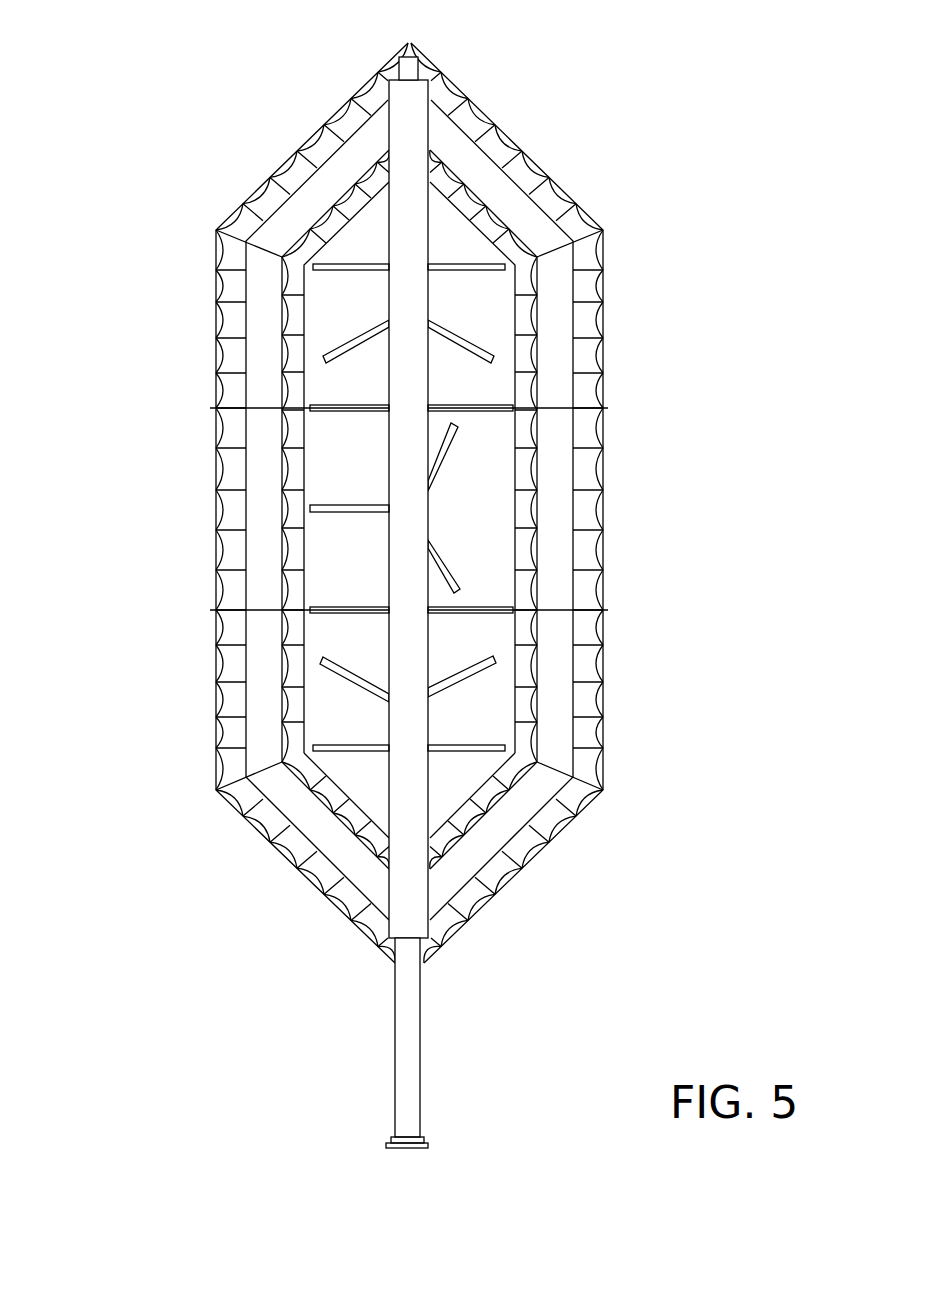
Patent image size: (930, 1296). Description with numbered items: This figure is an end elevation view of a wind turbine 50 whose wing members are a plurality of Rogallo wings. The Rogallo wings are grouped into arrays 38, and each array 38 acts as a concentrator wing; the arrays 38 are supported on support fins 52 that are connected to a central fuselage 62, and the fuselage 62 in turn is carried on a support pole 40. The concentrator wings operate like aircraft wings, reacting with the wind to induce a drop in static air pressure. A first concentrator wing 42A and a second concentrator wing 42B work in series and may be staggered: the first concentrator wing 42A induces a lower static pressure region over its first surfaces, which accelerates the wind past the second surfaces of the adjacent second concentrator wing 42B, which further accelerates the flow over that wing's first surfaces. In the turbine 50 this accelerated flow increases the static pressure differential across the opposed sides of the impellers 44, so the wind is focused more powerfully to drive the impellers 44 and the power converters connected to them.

The turbine 50 is at (115, 168).
The array of Rogallo wings 38 is at (638, 275).
The first concentrator wing 42A is at (597, 320).
The second concentrator wing 42B is at (530, 352).
The support fin 52 is at (545, 248).
The impeller 44 is at (458, 687).
The fuselage 62 is at (428, 883).
The support pole 40 is at (421, 1024).